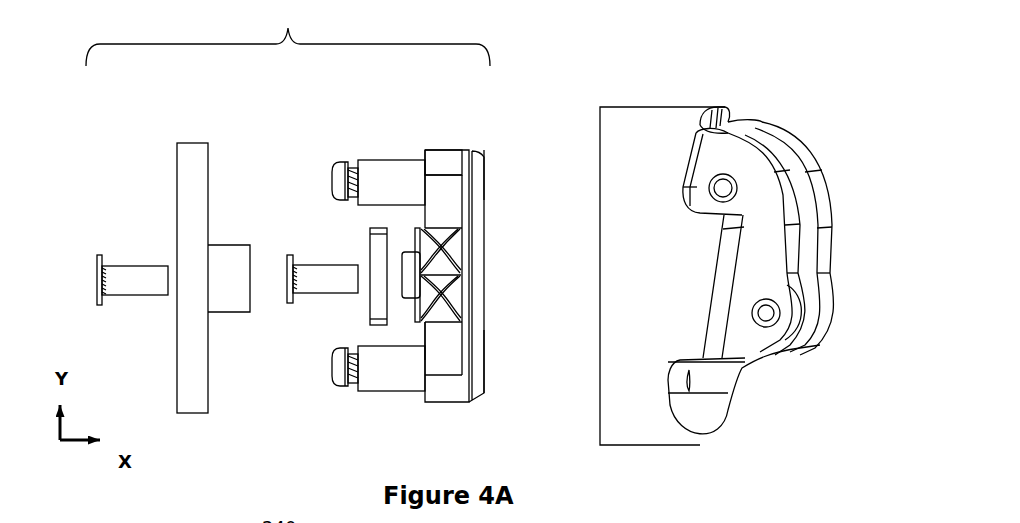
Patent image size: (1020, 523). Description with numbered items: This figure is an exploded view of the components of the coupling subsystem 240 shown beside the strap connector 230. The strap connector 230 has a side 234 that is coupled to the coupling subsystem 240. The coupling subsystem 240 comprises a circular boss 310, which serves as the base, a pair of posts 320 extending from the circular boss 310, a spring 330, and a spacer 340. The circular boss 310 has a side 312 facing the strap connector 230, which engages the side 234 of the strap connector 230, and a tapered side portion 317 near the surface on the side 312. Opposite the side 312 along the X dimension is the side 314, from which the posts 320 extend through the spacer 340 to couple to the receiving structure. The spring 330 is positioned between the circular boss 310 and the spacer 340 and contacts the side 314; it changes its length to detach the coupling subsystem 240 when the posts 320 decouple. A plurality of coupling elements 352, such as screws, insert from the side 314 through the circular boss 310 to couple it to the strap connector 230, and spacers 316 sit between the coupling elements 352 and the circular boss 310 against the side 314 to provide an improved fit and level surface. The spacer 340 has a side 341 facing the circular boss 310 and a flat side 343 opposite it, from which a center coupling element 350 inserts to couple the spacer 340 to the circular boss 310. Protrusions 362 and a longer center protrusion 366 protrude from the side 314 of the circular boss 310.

The coupling subsystem 240 is at (288, 33).
The strap connector 230 is at (676, 108).
The side 234 is at (600, 420).
The circular boss 310 is at (460, 152).
The side 312 is at (484, 355).
The side 314 is at (425, 337).
The spacer 316 is at (386, 246).
The tapered side portion 317 is at (480, 152).
The post 320 is at (392, 160).
The spring 330 is at (450, 253).
The spacer 340 is at (195, 398).
The side 341 is at (208, 363).
The side 343 is at (177, 363).
The center coupling element 350 is at (125, 268).
The coupling element 352 is at (314, 267).
The protrusion 362 is at (440, 160).
The center protrusion 366 is at (405, 287).